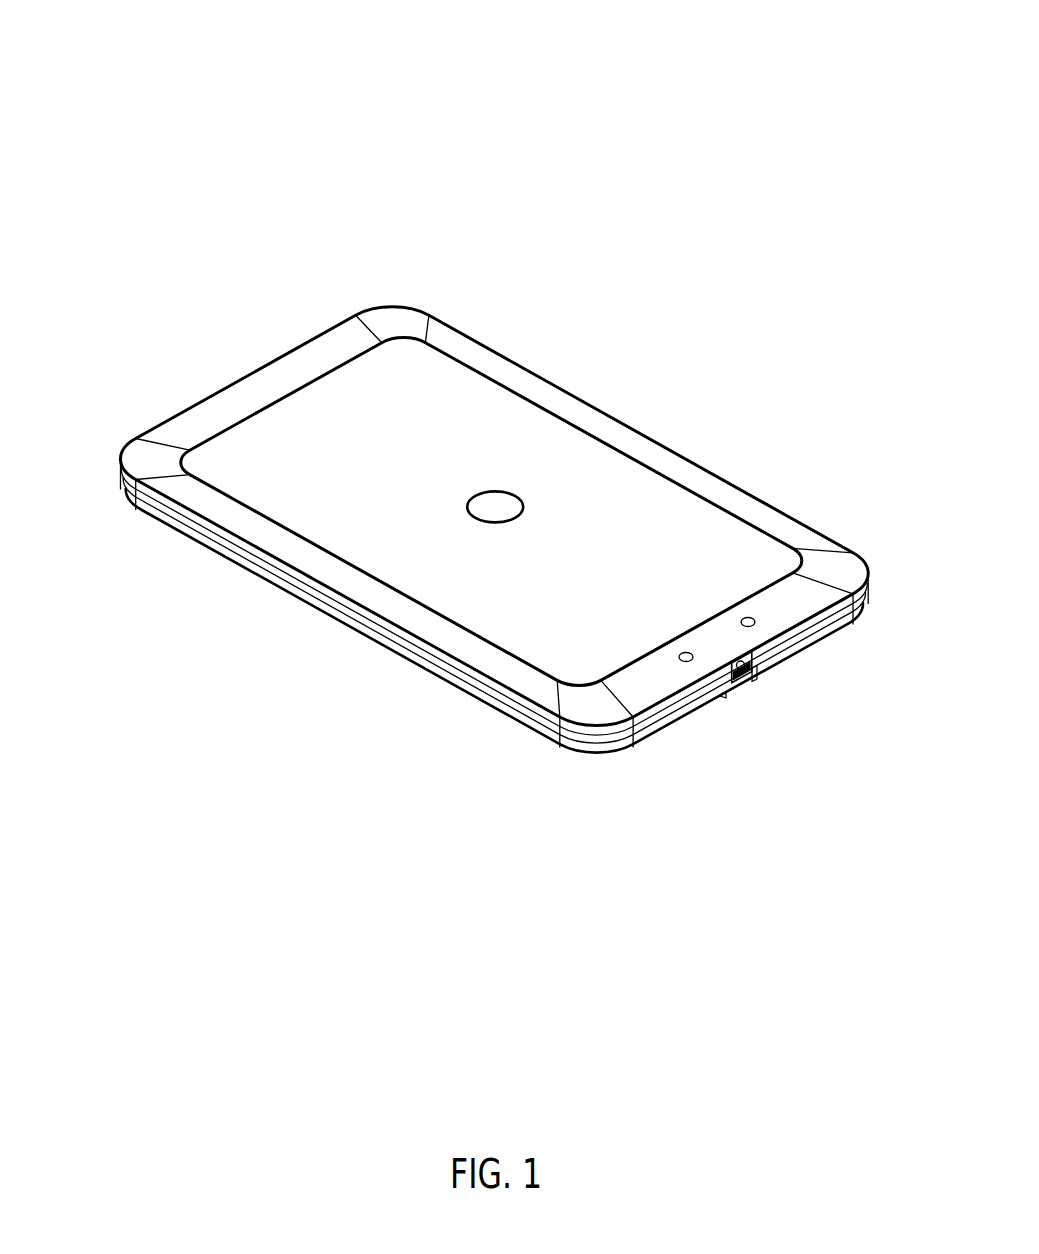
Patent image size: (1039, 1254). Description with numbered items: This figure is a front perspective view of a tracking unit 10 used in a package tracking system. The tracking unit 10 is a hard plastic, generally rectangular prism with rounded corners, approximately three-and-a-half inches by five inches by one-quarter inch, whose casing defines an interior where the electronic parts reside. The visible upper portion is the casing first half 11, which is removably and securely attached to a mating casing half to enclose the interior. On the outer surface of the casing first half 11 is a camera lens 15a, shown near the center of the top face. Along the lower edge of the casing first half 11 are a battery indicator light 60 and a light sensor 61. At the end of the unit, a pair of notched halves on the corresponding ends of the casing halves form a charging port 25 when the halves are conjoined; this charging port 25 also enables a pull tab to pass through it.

The tracking unit 10 is at (146, 131).
The casing first half 11 is at (119, 488).
The camera lens 15a is at (494, 512).
The charging port 25 is at (758, 676).
The battery indicator light 60 is at (688, 660).
The light sensor 61 is at (757, 621).